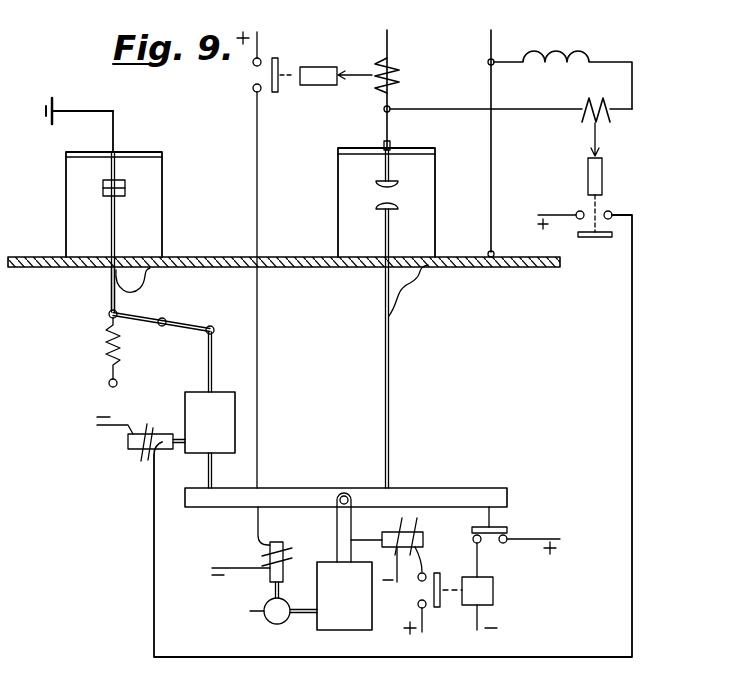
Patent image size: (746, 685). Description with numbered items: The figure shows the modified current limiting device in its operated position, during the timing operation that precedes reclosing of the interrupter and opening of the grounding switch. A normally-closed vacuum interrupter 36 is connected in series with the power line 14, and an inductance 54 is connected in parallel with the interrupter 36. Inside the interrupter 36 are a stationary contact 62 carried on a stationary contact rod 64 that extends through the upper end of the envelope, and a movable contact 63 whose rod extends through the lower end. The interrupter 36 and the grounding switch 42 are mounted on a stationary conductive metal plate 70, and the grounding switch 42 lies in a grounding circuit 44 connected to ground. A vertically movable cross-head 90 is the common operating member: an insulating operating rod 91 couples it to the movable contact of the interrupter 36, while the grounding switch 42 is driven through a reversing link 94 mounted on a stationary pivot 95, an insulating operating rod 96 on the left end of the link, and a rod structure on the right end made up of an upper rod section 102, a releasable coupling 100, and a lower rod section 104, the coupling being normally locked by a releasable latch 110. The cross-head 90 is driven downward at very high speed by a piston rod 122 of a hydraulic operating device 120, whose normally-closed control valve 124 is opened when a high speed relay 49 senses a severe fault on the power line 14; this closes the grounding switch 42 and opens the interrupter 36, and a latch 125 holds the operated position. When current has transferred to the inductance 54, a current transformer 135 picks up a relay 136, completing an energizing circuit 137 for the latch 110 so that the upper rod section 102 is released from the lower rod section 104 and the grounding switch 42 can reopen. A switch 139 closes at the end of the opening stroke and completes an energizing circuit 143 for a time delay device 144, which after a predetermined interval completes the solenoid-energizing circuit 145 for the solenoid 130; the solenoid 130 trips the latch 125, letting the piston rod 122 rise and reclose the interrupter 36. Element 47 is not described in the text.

The power line 14 is at (491, 170).
The interrupter 36 is at (332, 188).
The grounding switch 42 is at (58, 191).
The grounding circuit 44 is at (89, 110).
The spring 47 is at (395, 70).
The high speed relay 49 is at (318, 66).
The inductance 54 is at (565, 50).
The stationary contact 62 is at (396, 184).
The movable contact 63 is at (398, 205).
The stationary contact rod 64 is at (384, 145).
The stationary conductive metal plate 70 is at (297, 268).
The cross-head 90 is at (315, 492).
The insulating operating rod 91 is at (390, 385).
The reversing link 94 is at (144, 325).
The stationary pivot 95 is at (166, 316).
The insulating operating rod 96 is at (110, 296).
The releasable coupling 100 is at (195, 404).
The upper rod section 102 is at (212, 358).
The lower rod section 104 is at (205, 472).
The releasable latch 110 is at (130, 452).
The operating device 120 is at (372, 602).
The piston rod 122 is at (337, 528).
The control valve 124 is at (265, 623).
The latch 125 is at (358, 540).
The solenoid 130 is at (420, 530).
The current transformer 135 is at (612, 118).
The relay 136 is at (604, 175).
The energizing circuit 137 is at (634, 430).
The switch 139 is at (512, 532).
The energizing circuit 143 is at (530, 541).
The time delay device 144 is at (494, 596).
The solenoid-energizing circuit 145 is at (428, 572).